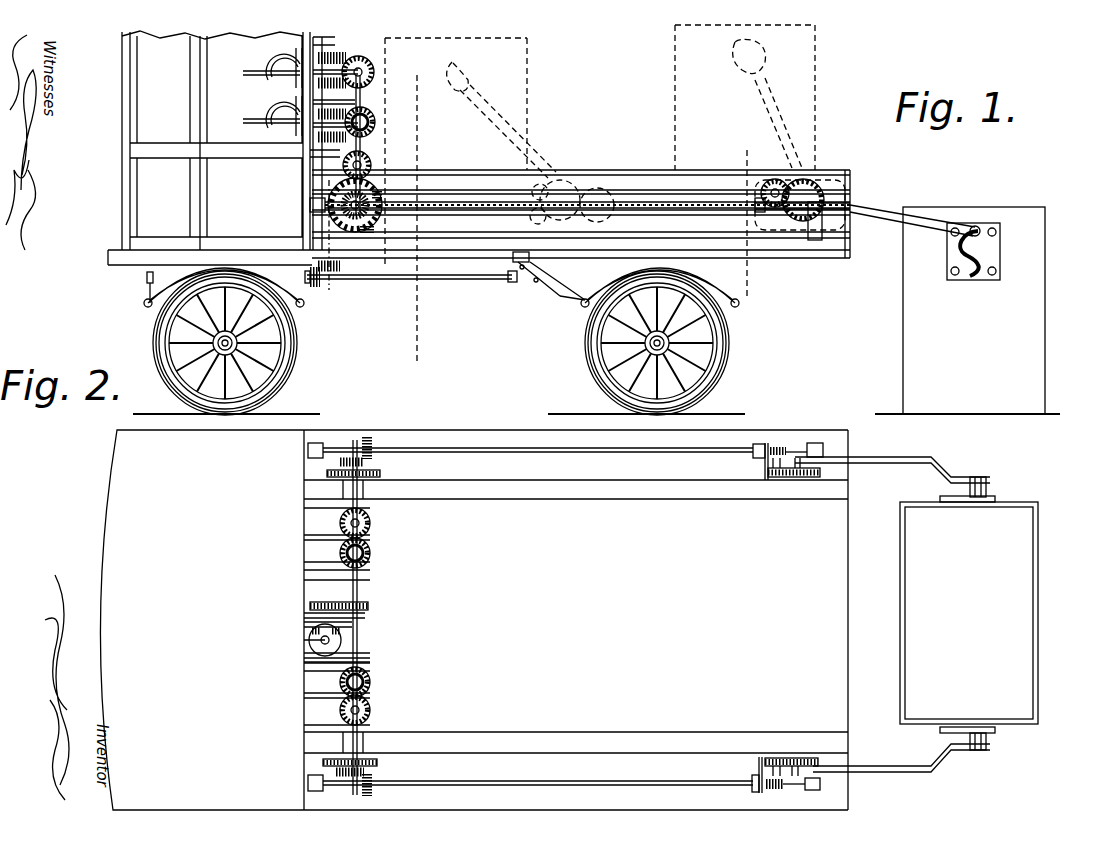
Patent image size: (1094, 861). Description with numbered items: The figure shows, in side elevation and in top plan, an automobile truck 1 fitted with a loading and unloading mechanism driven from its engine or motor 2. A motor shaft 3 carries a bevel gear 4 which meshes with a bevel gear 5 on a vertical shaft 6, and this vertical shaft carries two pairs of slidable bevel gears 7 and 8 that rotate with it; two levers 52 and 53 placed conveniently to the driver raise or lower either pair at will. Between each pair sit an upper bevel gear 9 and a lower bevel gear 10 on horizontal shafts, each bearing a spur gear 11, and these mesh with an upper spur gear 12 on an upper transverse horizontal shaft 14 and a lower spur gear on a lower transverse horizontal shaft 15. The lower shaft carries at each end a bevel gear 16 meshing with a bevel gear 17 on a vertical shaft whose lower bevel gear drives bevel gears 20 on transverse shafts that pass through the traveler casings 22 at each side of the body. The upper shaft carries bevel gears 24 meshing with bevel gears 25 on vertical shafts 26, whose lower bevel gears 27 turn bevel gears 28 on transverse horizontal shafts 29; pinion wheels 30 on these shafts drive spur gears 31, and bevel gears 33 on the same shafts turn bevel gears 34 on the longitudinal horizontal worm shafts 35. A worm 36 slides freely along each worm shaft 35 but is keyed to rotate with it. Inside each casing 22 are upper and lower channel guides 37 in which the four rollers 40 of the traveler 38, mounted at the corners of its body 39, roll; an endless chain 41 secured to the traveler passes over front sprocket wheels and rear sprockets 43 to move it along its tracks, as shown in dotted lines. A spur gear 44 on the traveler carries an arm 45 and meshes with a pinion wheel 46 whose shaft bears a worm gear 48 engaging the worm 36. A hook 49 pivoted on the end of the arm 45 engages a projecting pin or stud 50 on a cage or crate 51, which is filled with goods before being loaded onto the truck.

In FIG. 1, the automobile truck 1 is at (160, 173).
In FIG. 1, the engine or motor 2 is at (165, 277).
In FIG. 1, the lower shaft 3 is at (440, 279).
In FIG. 1, the bevel gear 4 is at (318, 288).
In FIG. 1, the bevel gear 5 is at (342, 272).
In FIG. 1, the vertical shaft 6 is at (320, 162).
In FIG. 1, the slidable bevel gear 7 is at (320, 106).
In FIG. 1, the slidable bevel gear 8 is at (300, 50).
In FIG. 2, the slidable bevel gear 8 is at (313, 650).
In FIG. 1, the upper bevel gear 9 is at (352, 60).
In FIG. 2, the upper bevel gear 9 is at (313, 630).
In FIG. 1, the lower bevel gear 10 is at (366, 100).
In FIG. 2, the spur gear 11 is at (330, 600).
In FIG. 2, the upper spur gear 12 is at (368, 606).
In FIG. 1, the upper transverse horizontal shaft 14 is at (441, 205).
In FIG. 2, the upper transverse horizontal shaft 14 is at (360, 615).
In FIG. 1, the lower transverse horizontal shaft 15 is at (745, 165).
In FIG. 1, the bevel gear 16 is at (378, 120).
In FIG. 2, the bevel gear 16 is at (370, 558).
In FIG. 2, the bevel gear 17 is at (370, 553).
In FIG. 2, the bevel gear 20 is at (372, 548).
In FIG. 1, the traveler casing 22 is at (632, 172).
In FIG. 2, the traveler casing 22 is at (710, 500).
In FIG. 1, the bevel gear 24 is at (360, 60).
In FIG. 2, the bevel gear 24 is at (340, 550).
In FIG. 1, the bevel gear 25 is at (372, 85).
In FIG. 2, the bevel gear 25 is at (372, 522).
In FIG. 1, the vertical shaft 26 is at (440, 100).
In FIG. 1, the bevel gear 27 is at (372, 158).
In FIG. 1, the bevel gear 28 is at (380, 165).
In FIG. 2, the bevel gear 28 is at (340, 522).
In FIG. 1, the transverse horizontal shaft 29 is at (330, 185).
In FIG. 1, the pinion wheel 30 is at (375, 185).
In FIG. 2, the pinion wheel 30 is at (360, 477).
In FIG. 1, the spur gear 31 is at (335, 202).
In FIG. 2, the spur gear 31 is at (382, 472).
In FIG. 1, the bevel gear 33 is at (368, 256).
In FIG. 2, the bevel gear 33 is at (340, 463).
In FIG. 1, the bevel gear 34 is at (372, 228).
In FIG. 2, the bevel gear 34 is at (367, 437).
In FIG. 1, the longitudinal horizontal worm shaft 35 is at (447, 222).
In FIG. 2, the longitudinal horizontal worm shaft 35 is at (453, 448).
In FIG. 1, the worm 36 is at (780, 232).
In FIG. 2, the worm 36 is at (782, 446).
In FIG. 1, the channel guide 37 is at (688, 172).
In FIG. 1, the traveler 38 is at (575, 185).
In FIG. 1, the body 39 is at (832, 237).
In FIG. 1, the roller 40 is at (835, 180).
In FIG. 1, the endless chain 41 is at (715, 170).
In FIG. 1, the sprocket 43 is at (848, 195).
In FIG. 1, the spur gear 44 is at (815, 240).
In FIG. 2, the spur gear 44 is at (800, 478).
In FIG. 1, the arm 45 is at (922, 215).
In FIG. 2, the arm 45 is at (889, 464).
In FIG. 2, the pinion wheel 46 is at (767, 480).
In FIG. 2, the worm gear 48 is at (815, 443).
In FIG. 1, the hook 49 is at (985, 252).
In FIG. 2, the hook 49 is at (988, 482).
In FIG. 1, the projecting pin or stud 50 is at (952, 255).
In FIG. 2, the projecting pin or stud 50 is at (945, 498).
In FIG. 1, the cage or crate 51 is at (920, 350).
In FIG. 2, the cage or crate 51 is at (935, 600).
In FIG. 1, the lever 52 is at (252, 73).
In FIG. 1, the lever 53 is at (252, 121).